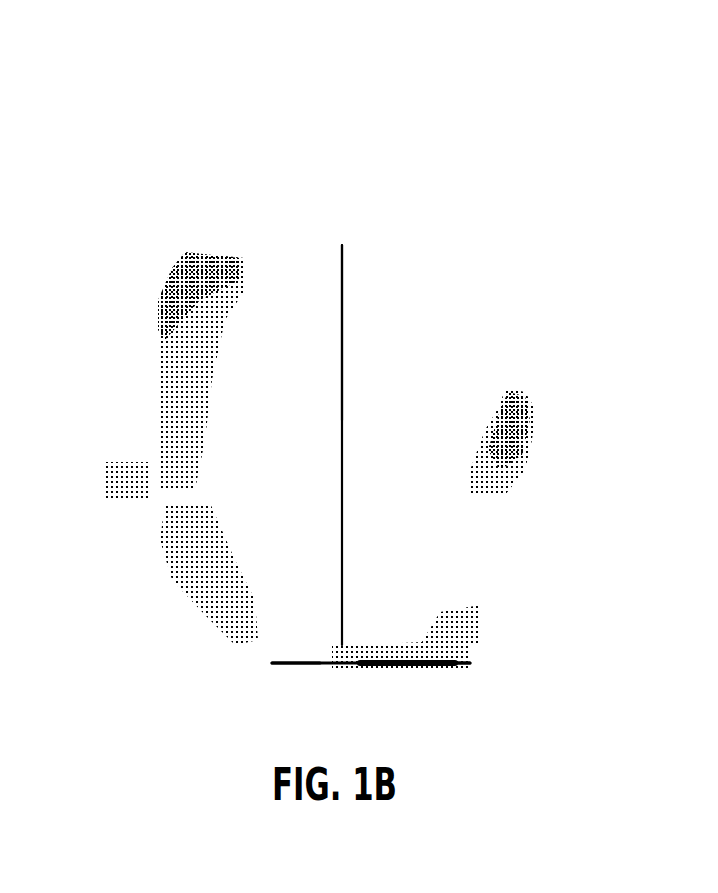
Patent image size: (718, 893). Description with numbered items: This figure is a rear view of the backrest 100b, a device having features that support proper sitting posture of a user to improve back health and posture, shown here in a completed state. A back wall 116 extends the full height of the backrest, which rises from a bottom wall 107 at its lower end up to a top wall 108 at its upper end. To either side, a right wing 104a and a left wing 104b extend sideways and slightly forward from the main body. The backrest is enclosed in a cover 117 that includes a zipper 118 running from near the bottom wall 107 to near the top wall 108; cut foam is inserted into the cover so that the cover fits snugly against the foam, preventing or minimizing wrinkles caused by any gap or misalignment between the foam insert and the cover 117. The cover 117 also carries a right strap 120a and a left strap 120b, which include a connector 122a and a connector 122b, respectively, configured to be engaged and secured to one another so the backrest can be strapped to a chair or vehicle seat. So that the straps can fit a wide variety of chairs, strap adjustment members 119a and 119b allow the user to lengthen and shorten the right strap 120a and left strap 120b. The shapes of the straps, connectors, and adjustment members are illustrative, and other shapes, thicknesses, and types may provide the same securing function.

The backrest 100b is at (391, 158).
The right wing 104a is at (553, 310).
The left wing 104b is at (141, 300).
The bottom wall 107 is at (382, 666).
The top wall 108 is at (455, 221).
The back wall 116 is at (235, 295).
The cover 117 is at (475, 269).
The zipper 118 is at (343, 245).
The strap adjustment member 119a is at (590, 480).
The strap adjustment member 119b is at (105, 480).
The right strap 120a is at (587, 515).
The left strap 120b is at (198, 534).
The connector 122a is at (508, 660).
The connector 122b is at (250, 662).